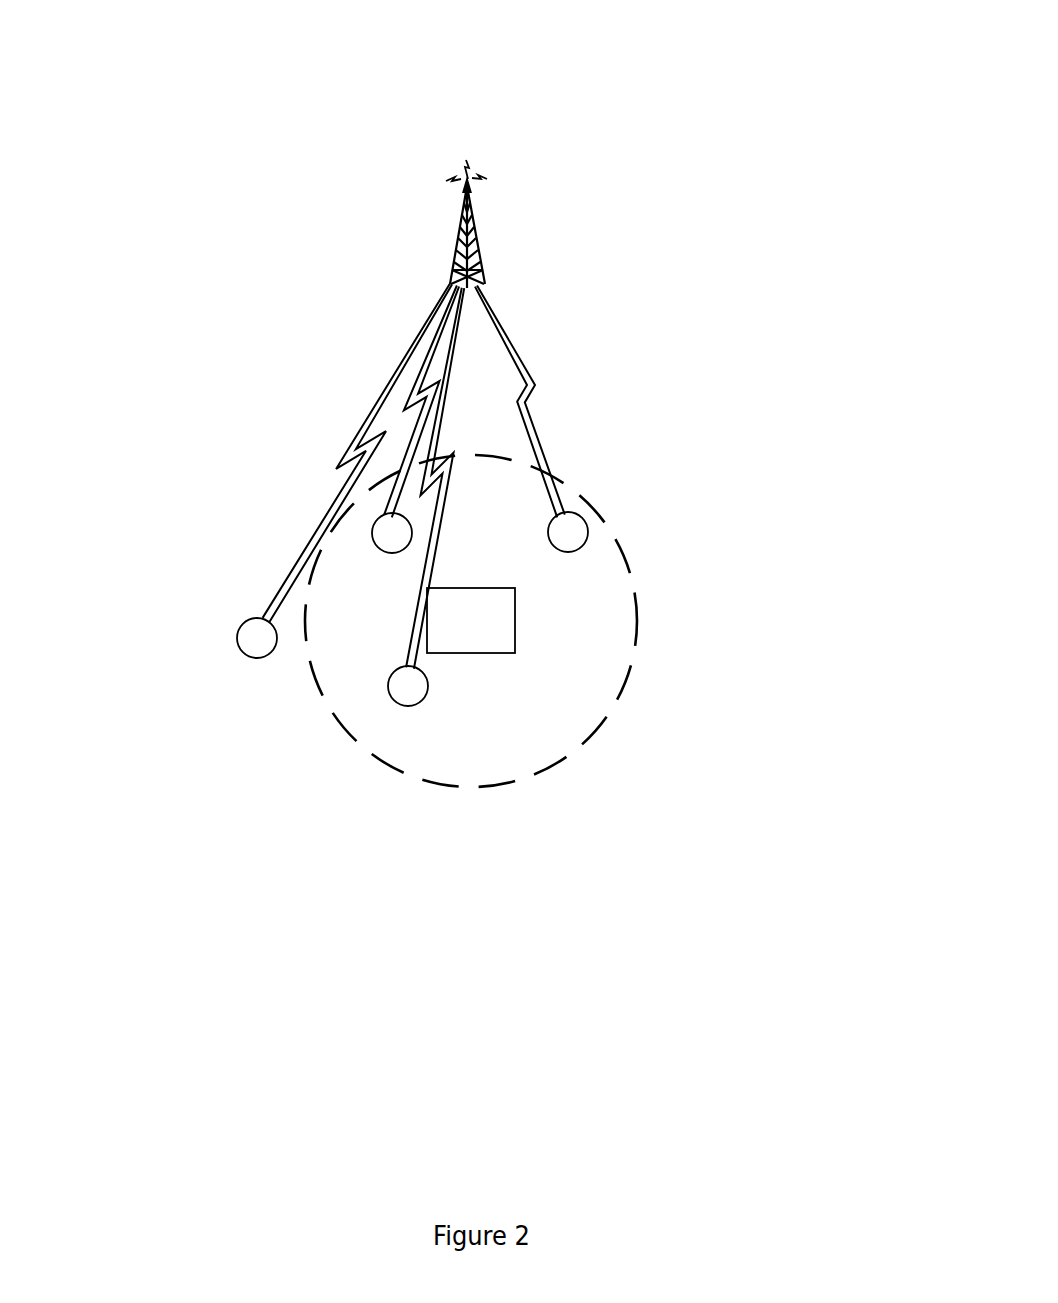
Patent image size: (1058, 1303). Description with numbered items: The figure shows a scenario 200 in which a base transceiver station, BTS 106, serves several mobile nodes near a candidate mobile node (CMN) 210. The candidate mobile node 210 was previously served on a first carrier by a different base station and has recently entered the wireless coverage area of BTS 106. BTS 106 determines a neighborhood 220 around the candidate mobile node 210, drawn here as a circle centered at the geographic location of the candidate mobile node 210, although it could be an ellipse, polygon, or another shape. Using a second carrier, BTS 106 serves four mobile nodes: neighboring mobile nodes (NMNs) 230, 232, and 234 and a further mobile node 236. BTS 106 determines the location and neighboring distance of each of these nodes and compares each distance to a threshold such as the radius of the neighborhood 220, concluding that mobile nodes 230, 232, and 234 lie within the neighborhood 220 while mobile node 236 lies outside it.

The wireless communication system 200 is at (786, 42).
The BTS 106 is at (467, 208).
The neighborhood 220 is at (584, 504).
The candidate mobile node 210 is at (493, 648).
The neighboring mobile node 230 is at (379, 514).
The neighboring mobile node 232 is at (590, 533).
The neighboring mobile node 234 is at (388, 689).
The mobile node 236 is at (237, 639).